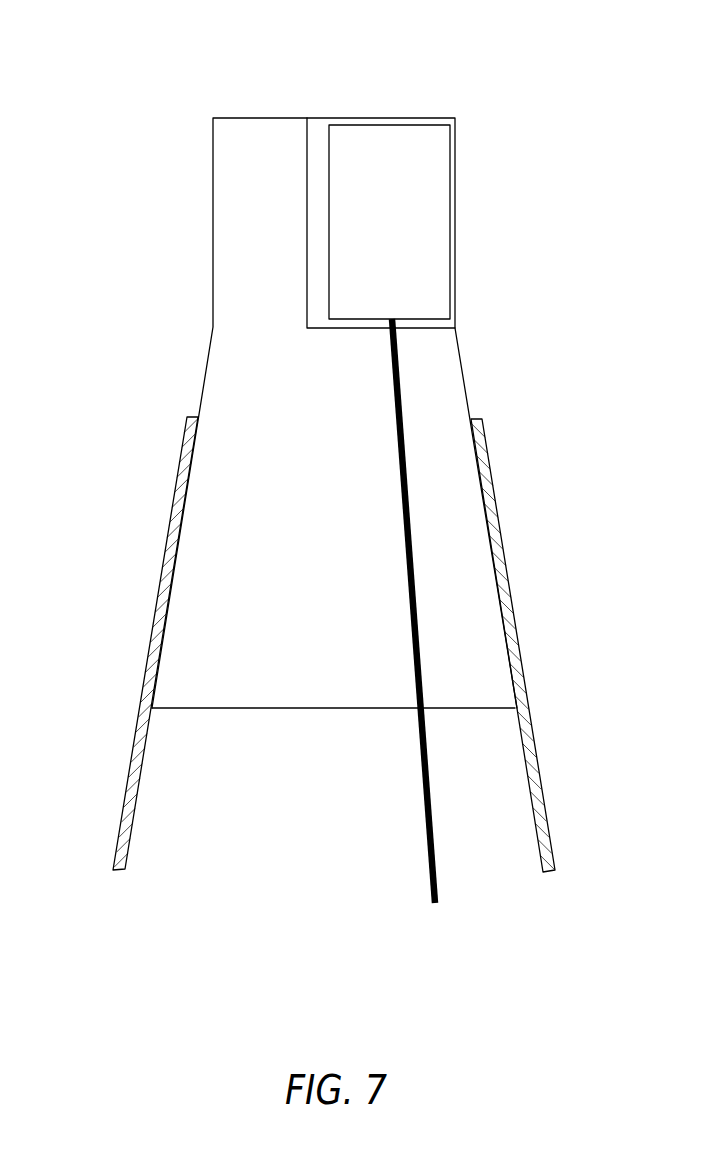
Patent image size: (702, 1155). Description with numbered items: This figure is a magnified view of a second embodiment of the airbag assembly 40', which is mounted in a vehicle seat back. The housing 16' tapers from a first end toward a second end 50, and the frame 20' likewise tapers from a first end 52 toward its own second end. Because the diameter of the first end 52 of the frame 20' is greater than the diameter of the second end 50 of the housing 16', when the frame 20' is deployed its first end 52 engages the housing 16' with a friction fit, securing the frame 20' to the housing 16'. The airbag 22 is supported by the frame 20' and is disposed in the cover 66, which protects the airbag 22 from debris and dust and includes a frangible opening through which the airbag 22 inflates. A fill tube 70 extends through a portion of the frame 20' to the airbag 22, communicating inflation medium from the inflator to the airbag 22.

The airbag assembly 40' is at (308, 485).
The frame 20' is at (350, 413).
The cover 66 is at (431, 117).
The airbag 22 is at (432, 160).
The fill tube 70 is at (402, 568).
The first end of the frame 52 is at (270, 708).
The housing 16' is at (141, 643).
The second end of the housing 50 is at (473, 418).